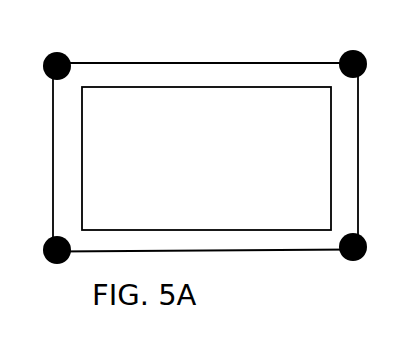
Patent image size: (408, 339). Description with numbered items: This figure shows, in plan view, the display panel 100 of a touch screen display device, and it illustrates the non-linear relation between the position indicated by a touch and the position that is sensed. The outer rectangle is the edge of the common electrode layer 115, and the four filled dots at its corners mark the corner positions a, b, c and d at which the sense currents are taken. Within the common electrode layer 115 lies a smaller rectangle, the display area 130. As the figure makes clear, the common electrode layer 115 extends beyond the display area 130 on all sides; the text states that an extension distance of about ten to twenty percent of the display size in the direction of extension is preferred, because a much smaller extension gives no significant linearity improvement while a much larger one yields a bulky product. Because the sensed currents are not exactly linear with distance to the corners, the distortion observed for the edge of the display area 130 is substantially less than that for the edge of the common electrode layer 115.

The display panel 100 is at (199, 182).
The common electrode layer 115 is at (244, 61).
The display area 130 is at (126, 86).